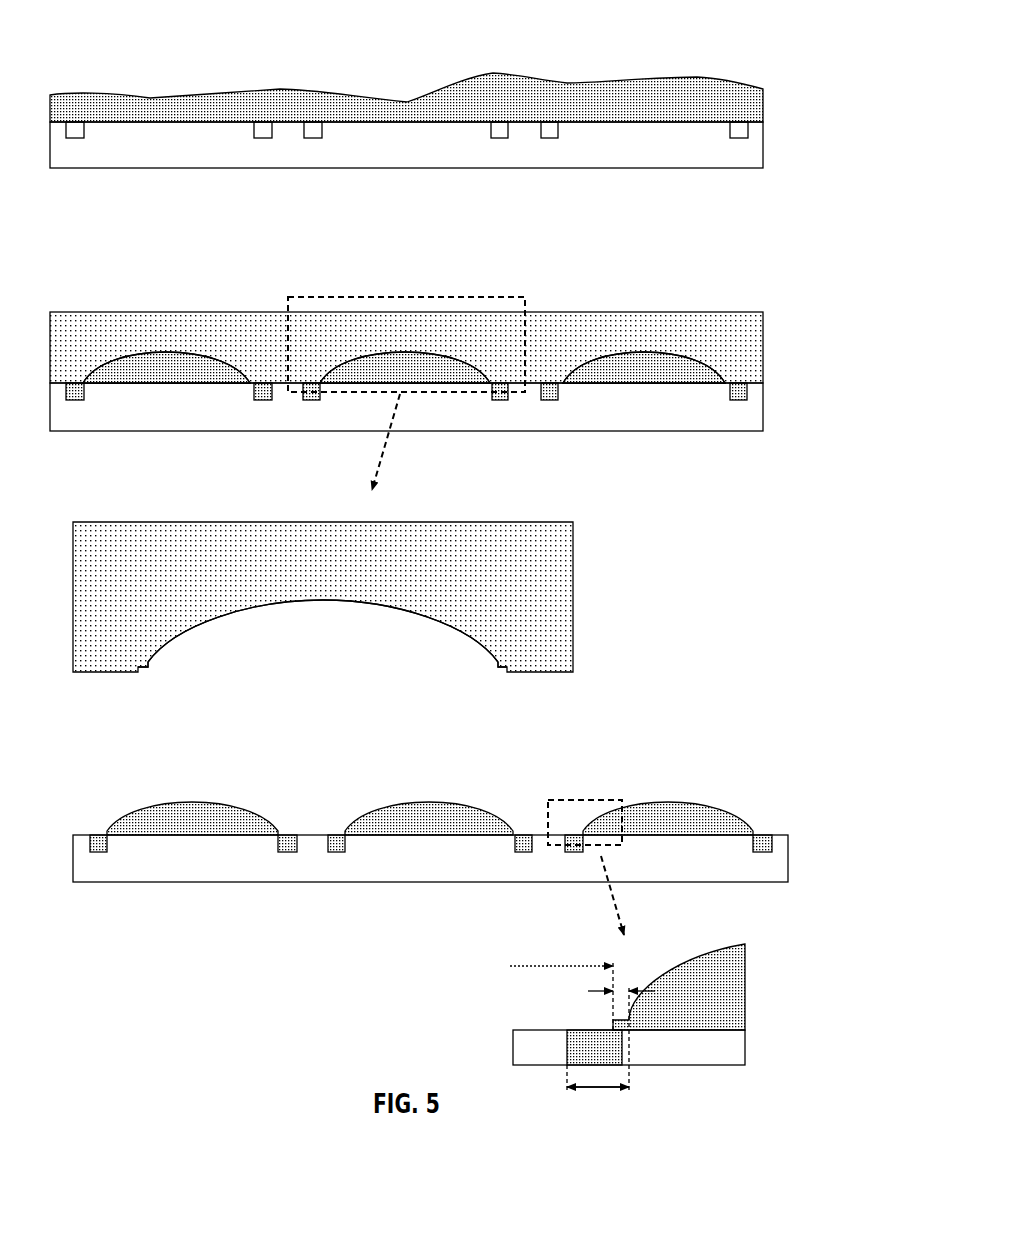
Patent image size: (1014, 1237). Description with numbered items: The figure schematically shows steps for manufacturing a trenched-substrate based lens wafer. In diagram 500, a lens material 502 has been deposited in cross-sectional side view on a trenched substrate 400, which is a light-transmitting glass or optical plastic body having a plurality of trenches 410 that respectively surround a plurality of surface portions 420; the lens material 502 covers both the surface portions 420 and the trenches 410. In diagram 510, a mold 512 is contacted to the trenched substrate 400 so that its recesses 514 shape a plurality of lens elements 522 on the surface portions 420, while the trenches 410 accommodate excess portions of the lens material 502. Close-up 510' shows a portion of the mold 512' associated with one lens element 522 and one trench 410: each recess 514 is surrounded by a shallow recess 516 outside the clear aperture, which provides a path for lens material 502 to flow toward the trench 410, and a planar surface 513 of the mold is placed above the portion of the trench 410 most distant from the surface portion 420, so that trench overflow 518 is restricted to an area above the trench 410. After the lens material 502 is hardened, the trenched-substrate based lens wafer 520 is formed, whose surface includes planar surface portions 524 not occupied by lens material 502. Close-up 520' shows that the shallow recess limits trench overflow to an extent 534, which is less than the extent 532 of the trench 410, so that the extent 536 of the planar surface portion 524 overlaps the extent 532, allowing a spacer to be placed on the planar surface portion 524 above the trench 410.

The diagram 500 is at (400, 190).
The lens material 502 is at (330, 92).
The surface portion 420 is at (408, 116).
The trench 410 is at (262, 140).
The trenched substrate 400 is at (675, 168).
The diagram 510 is at (400, 539).
The mold 512 is at (406, 313).
The recess 514 is at (440, 366).
The trench overflow 518 is at (497, 372).
The planar surface 513 is at (313, 388).
The lens element 522 is at (445, 368).
The close-up diagram 510' is at (384, 599).
The mold 512' is at (368, 597).
The shallow recess 516 is at (148, 667).
The trenched-substrate based lens wafer 520 is at (336, 839).
The planar surface portion 524 is at (318, 832).
The close-up 520' is at (595, 1015).
The extent of trench 532 is at (605, 1090).
The extent of trench overflow 534 is at (588, 991).
The extent of planar surface portion 536 is at (545, 966).